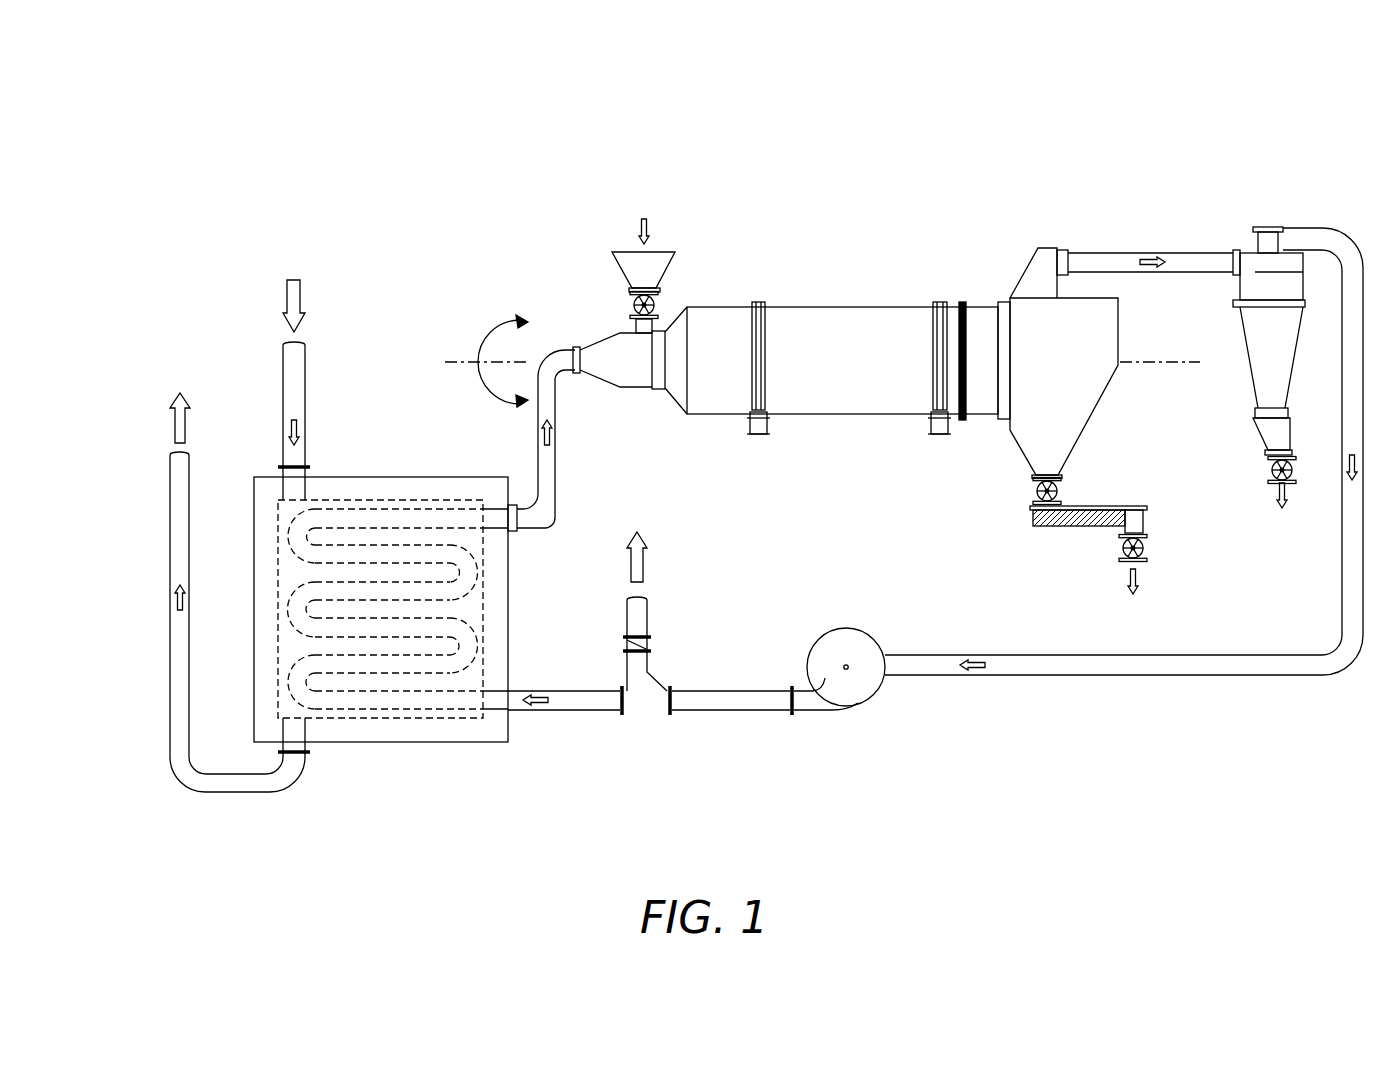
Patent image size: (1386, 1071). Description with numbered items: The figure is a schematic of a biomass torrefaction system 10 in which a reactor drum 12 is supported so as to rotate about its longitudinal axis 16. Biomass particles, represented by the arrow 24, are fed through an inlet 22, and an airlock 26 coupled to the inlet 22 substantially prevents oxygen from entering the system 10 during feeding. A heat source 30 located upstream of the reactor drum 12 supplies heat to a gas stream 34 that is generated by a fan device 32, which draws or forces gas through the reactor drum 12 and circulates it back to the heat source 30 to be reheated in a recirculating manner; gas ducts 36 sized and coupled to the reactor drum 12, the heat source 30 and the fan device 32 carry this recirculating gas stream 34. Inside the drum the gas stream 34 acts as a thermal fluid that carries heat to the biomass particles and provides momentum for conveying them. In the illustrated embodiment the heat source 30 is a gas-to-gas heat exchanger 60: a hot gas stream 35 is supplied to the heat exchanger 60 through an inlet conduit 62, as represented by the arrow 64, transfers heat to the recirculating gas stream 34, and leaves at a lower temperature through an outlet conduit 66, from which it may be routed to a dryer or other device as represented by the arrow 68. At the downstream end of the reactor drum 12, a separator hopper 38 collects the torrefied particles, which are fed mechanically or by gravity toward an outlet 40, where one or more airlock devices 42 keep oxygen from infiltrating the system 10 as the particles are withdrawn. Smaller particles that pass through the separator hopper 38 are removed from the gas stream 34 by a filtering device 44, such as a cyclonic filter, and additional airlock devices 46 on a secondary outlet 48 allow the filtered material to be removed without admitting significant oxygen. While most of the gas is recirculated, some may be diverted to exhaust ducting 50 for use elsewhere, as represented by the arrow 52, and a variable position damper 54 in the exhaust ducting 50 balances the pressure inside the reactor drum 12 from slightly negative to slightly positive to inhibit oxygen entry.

The biomass torrefaction system 10 is at (912, 147).
The reactor drum 12 is at (873, 312).
The longitudinal axis 16 is at (455, 362).
The inlet 22 is at (655, 268).
The biomass particles 24 is at (650, 229).
The airlock 26 is at (632, 306).
The heat source 30 is at (428, 780).
The fan device 32 is at (853, 640).
The gas stream 34 is at (553, 445).
The hot gas stream 35 is at (300, 432).
The gas ducts 36 is at (1100, 253).
The separator hopper 38 is at (1088, 405).
The outlet 40 is at (1113, 581).
The airlock devices 42 is at (1035, 491).
The filtering device 44 is at (1250, 352).
The additional airlock devices 46 is at (1270, 470).
The secondary outlet 48 is at (1313, 492).
The exhaust ducting 50 is at (627, 612).
The exhaust gas 52 is at (642, 567).
The variable position damper 54 is at (650, 645).
The gas-to-gas heat exchanger 60 is at (385, 487).
The inlet conduit 62 is at (295, 400).
The hot gas supply 64 is at (302, 292).
The outlet conduit 66 is at (235, 786).
The discharged gas routing 68 is at (183, 425).